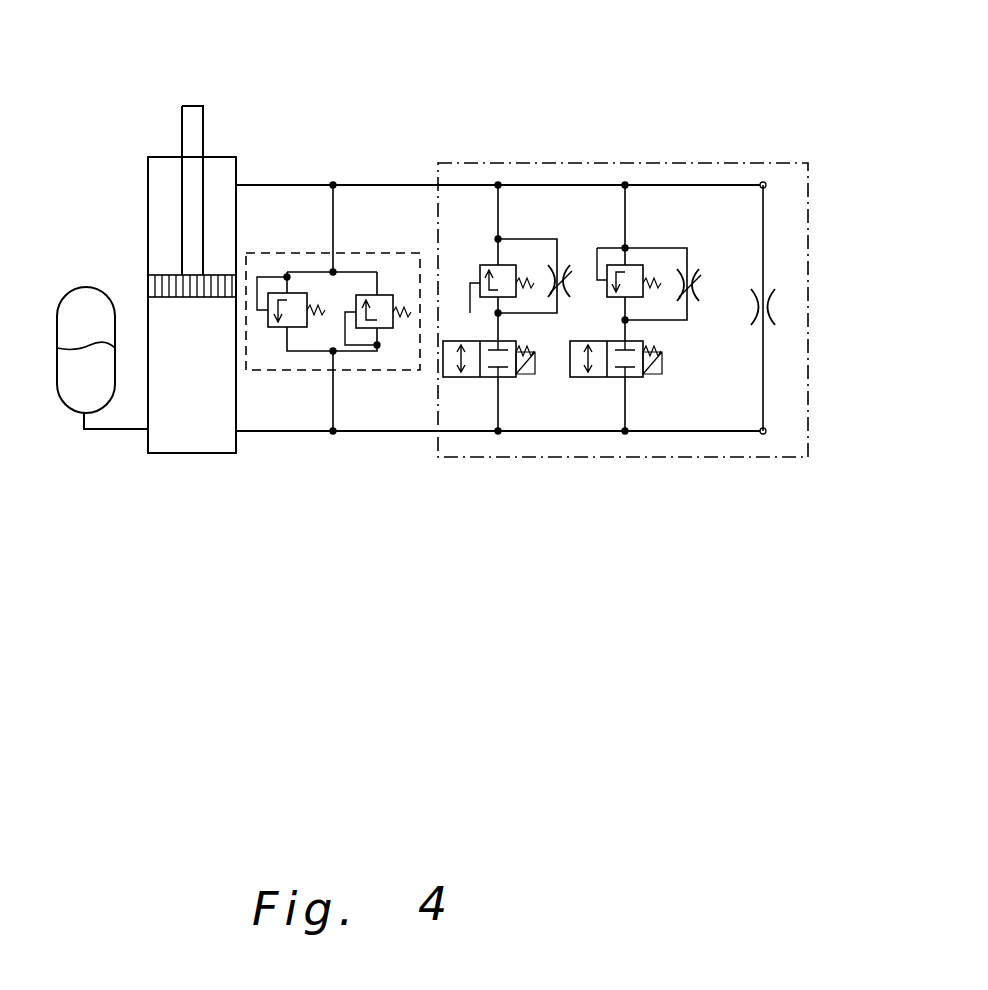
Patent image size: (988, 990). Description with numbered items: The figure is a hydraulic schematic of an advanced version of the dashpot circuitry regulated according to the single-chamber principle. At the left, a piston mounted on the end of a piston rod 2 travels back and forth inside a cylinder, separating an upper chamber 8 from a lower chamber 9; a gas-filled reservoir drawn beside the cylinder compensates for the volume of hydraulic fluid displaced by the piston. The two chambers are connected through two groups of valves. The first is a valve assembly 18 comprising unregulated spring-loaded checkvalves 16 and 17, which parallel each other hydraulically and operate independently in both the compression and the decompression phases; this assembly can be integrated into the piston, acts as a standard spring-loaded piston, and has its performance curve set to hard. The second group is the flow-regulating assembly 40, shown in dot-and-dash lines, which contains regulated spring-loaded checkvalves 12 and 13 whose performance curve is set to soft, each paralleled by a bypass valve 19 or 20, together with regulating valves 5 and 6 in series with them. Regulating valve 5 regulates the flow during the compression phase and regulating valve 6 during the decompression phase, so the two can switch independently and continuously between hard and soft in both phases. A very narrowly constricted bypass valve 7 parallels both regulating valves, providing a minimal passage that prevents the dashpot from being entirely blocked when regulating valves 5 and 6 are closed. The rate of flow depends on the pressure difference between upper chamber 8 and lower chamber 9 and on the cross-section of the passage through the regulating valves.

The piston rod 2 is at (188, 128).
The regulating valve 5 is at (490, 378).
The regulating valve 6 is at (618, 378).
The bypass valve 7 is at (768, 313).
The upper chamber 8 is at (158, 213).
The lower chamber 9 is at (178, 432).
The regulated spring-loaded checkvalve 12 is at (495, 265).
The regulated spring-loaded checkvalve 13 is at (628, 270).
The unregulated spring-loaded checkvalve 16 is at (285, 295).
The unregulated spring-loaded checkvalve 17 is at (379, 296).
The valve assembly 18 is at (298, 375).
The bypass valve 19 is at (562, 288).
The bypass valve 20 is at (690, 290).
The flow-regulating assembly 40 is at (752, 458).